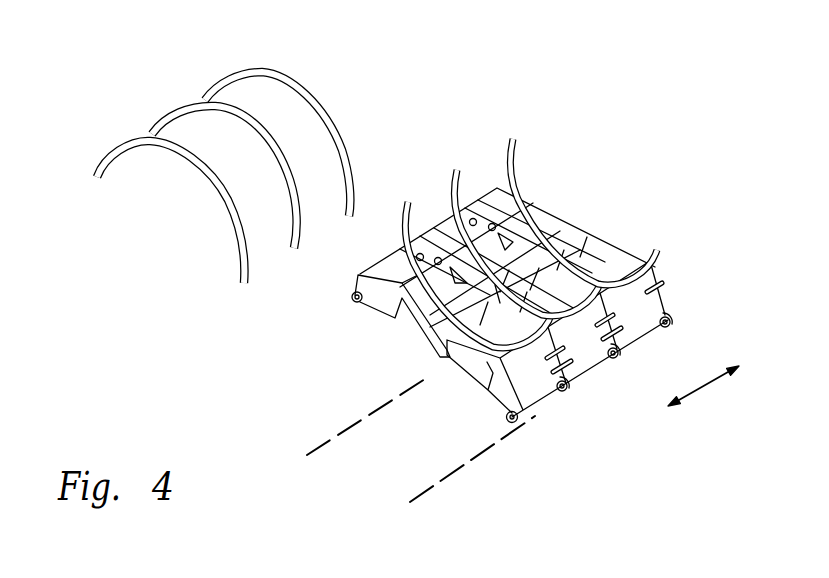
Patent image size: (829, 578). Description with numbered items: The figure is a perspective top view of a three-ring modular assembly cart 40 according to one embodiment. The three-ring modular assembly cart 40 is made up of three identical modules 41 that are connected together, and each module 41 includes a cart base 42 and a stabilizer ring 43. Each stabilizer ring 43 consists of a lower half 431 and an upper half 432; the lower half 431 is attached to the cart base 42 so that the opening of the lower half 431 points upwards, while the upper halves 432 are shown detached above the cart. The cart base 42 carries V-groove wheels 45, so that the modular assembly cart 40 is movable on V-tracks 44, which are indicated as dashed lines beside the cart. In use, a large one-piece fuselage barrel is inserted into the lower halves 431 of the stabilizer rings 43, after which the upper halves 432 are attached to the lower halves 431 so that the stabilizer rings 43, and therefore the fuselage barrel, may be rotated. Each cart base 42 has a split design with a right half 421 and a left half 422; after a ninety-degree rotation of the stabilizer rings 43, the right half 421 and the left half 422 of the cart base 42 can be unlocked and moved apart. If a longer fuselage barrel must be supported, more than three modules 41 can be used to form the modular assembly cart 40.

The three-ring modular assembly cart 40 is at (217, 398).
The module 41 is at (544, 380).
The cart base 42 is at (608, 263).
The right half 421 is at (478, 353).
The left half 422 is at (422, 318).
The stabilizer ring 43 is at (503, 167).
The lower half 431 is at (640, 272).
The upper half 432 is at (217, 80).
The V-tracks 44 is at (440, 482).
The V-groove wheels 45 is at (352, 303).